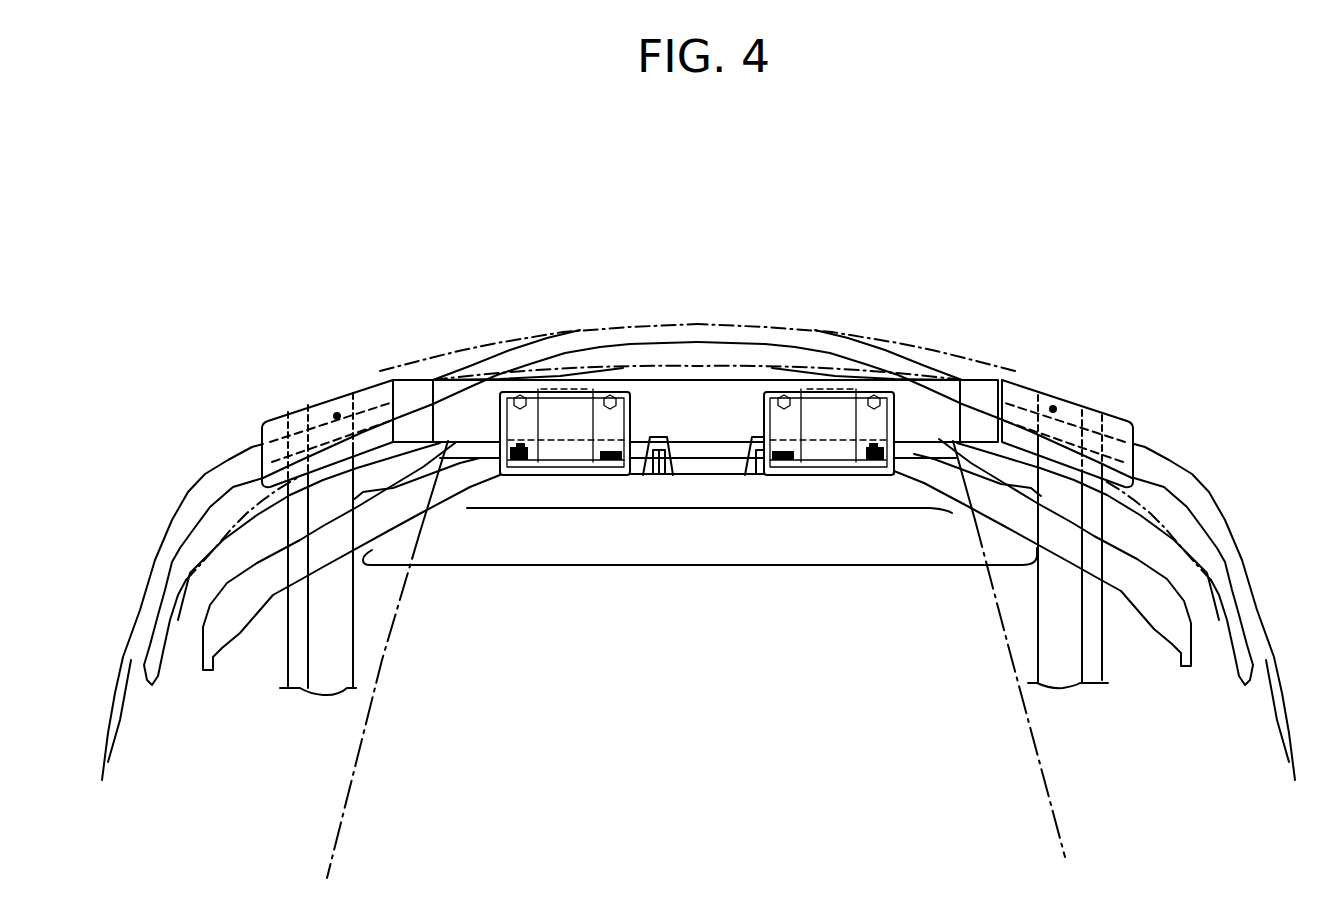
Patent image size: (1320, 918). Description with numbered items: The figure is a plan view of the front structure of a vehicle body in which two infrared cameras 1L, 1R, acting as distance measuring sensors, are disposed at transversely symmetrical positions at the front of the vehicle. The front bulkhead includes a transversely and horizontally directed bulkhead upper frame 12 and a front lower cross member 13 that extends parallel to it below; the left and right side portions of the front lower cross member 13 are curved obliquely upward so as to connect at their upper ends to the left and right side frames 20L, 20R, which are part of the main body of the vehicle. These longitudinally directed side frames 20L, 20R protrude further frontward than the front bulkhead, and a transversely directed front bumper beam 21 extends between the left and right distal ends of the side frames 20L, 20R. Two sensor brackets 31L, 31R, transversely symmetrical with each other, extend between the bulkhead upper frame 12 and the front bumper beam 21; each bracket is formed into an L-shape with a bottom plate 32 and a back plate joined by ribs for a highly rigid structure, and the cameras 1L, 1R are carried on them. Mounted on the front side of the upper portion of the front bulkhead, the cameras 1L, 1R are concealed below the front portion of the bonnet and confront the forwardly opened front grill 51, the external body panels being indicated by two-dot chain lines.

The left infrared camera 1L is at (528, 422).
The right infrared camera 1R is at (866, 422).
The bulkhead upper frame 12 is at (701, 488).
The front lower cross member 13 is at (607, 566).
The left side frame 20L is at (297, 660).
The right side frame 20R is at (1092, 654).
The front bumper beam 21 is at (724, 382).
The left sensor bracket 31L is at (527, 477).
The right sensor bracket 31R is at (878, 474).
The bottom plate 32 is at (612, 390).
The front grill 51 is at (683, 344).